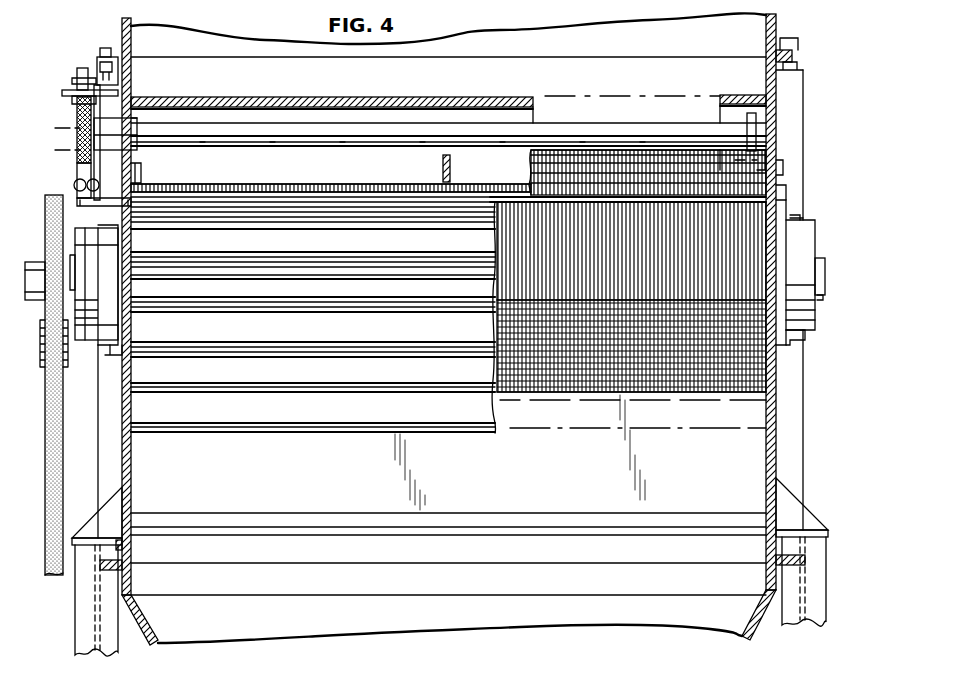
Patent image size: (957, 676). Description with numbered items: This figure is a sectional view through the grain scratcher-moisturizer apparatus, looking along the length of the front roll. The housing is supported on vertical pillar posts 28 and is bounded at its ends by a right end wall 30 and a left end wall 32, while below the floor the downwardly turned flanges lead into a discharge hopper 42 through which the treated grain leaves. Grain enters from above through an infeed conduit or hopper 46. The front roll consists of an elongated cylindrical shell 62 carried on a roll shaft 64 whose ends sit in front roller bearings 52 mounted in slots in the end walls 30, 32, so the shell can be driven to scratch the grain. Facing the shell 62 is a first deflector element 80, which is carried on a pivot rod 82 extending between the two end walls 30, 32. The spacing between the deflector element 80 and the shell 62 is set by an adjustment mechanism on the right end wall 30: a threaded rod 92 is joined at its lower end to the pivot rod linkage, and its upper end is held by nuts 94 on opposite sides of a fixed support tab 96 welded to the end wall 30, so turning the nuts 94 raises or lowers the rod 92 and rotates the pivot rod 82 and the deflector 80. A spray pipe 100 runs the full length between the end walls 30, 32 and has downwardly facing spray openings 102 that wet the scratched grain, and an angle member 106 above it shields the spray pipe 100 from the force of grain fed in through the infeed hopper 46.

The vertical pillar posts 28 is at (80, 633).
The right end wall 30 is at (122, 460).
The left end wall 32 is at (780, 448).
The discharge hopper 42 is at (752, 640).
The infeed conduit or hopper 46 is at (778, 15).
The front roller bearings 52 is at (805, 242).
The elongated cylindrical shell 62 is at (584, 396).
The roll shaft 64 is at (826, 283).
The first deflector element 80 is at (430, 410).
The pivot rod 82 is at (75, 210).
The threaded rod 92 is at (77, 135).
The nuts 94 is at (80, 68).
The fixed support tab 96 is at (68, 90).
The spray pipe 100 is at (635, 120).
The spray openings 102 is at (340, 163).
The angle member 106 is at (312, 98).